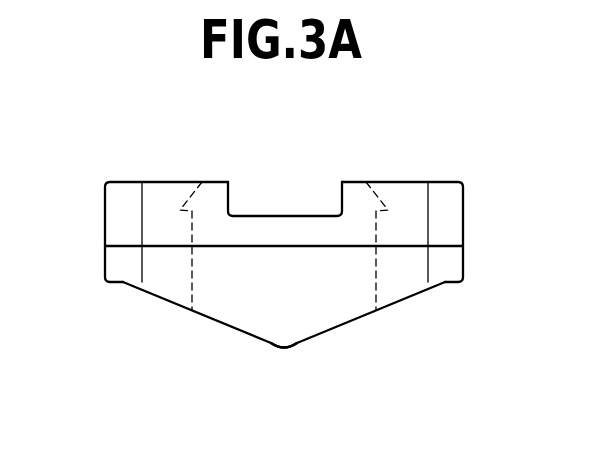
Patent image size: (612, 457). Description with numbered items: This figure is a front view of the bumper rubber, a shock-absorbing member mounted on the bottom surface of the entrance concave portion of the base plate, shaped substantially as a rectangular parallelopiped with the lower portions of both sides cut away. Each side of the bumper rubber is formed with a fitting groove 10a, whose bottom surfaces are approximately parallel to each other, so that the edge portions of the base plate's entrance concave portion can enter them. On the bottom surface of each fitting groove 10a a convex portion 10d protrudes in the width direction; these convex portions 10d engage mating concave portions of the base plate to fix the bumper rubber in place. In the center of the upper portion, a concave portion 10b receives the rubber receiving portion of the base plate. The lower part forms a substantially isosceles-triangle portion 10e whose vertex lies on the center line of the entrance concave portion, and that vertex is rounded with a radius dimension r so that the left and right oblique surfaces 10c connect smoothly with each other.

The fitting groove 10a is at (193, 285).
The concave portion 10b is at (282, 216).
The oblique surface 10c is at (223, 323).
The convex portion 10d is at (180, 210).
The substantially isosceles-triangle portion 10e is at (300, 330).
The radius dimension r is at (288, 346).